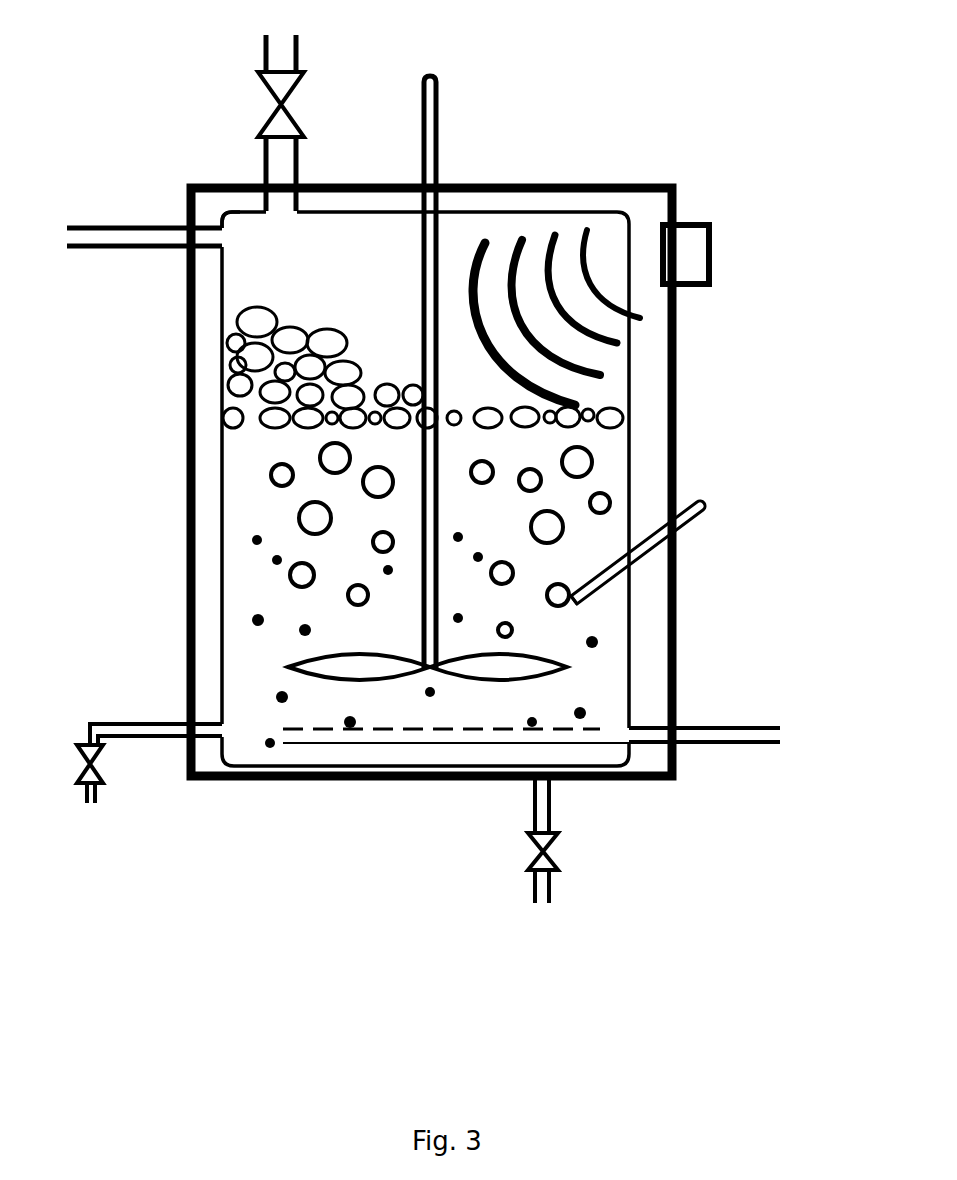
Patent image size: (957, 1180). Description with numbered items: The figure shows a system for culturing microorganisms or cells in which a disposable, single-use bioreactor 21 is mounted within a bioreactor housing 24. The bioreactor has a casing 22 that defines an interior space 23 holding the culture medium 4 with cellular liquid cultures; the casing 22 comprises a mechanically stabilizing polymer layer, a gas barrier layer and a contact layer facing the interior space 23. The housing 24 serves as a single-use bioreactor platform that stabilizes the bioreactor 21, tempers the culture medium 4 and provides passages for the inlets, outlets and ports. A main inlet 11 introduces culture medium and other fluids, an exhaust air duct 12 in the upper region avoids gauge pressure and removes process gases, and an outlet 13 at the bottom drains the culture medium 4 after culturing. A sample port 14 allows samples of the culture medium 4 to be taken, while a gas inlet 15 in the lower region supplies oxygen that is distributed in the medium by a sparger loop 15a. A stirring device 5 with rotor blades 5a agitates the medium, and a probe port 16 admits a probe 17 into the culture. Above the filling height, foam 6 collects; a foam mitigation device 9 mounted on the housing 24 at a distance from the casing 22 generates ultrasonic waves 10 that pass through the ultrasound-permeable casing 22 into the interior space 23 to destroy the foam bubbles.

The culture medium 4 is at (535, 617).
The stirring device 5 is at (429, 74).
The rotor blades 5a is at (380, 668).
The foam 6 is at (305, 321).
The foam mitigation device 9 is at (703, 222).
The ultrasonic waves 10 is at (530, 231).
The main inlet 11 is at (97, 226).
The exhaust air duct 12 is at (298, 163).
The outlet 13 is at (530, 803).
The sample port 14 is at (180, 723).
The gas inlet 15 is at (680, 726).
The sparger loop 15a is at (392, 746).
The probe port 16 is at (637, 567).
The probe 17 is at (579, 600).
The disposable single-use bioreactor 21 is at (220, 211).
The casing 22 is at (220, 553).
The interior space 23 is at (358, 285).
The bioreactor housing 24 is at (189, 421).